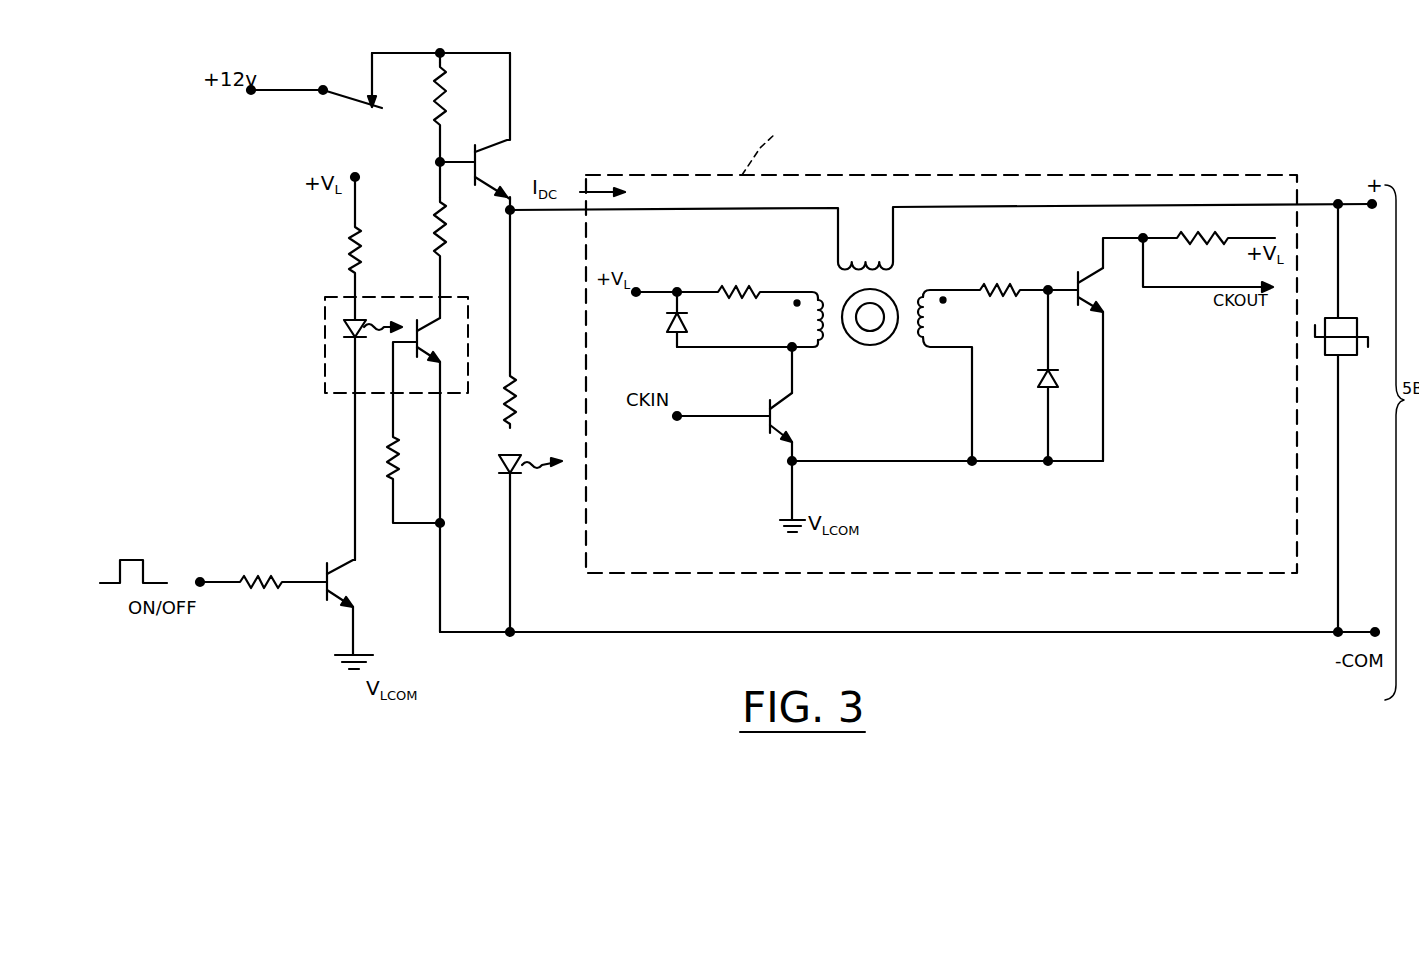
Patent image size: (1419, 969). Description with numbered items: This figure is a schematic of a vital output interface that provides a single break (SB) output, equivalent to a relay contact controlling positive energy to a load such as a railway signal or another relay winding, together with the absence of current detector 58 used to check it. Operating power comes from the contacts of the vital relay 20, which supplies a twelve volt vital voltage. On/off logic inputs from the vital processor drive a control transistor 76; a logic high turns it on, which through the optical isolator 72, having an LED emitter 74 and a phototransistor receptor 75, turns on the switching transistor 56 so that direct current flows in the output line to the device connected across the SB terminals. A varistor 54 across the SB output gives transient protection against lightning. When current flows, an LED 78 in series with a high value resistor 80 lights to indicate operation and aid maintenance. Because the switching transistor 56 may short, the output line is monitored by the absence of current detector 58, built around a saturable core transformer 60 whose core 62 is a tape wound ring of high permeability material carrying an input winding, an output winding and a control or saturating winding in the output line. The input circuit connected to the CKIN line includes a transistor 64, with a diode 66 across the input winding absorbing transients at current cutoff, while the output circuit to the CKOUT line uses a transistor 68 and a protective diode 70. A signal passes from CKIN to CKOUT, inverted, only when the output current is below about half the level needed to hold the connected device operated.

The vital relay 20 is at (340, 118).
The varistor 54 is at (1347, 357).
The switching transistor 56 is at (482, 146).
The absence of current detector 58 is at (1185, 173).
The saturable core transformer 60 is at (856, 406).
The core 62 is at (866, 345).
The transistor 64 is at (754, 430).
The diode 66 is at (668, 328).
The transistor 68 is at (1078, 270).
The protective diode 70 is at (1040, 389).
The optical isolator 72 is at (325, 325).
The LED emitter 74 is at (350, 332).
The phototransistor receptor 75 is at (425, 321).
The control transistor 76 is at (322, 568).
The LED 78 is at (518, 477).
The high value resistor 80 is at (522, 410).